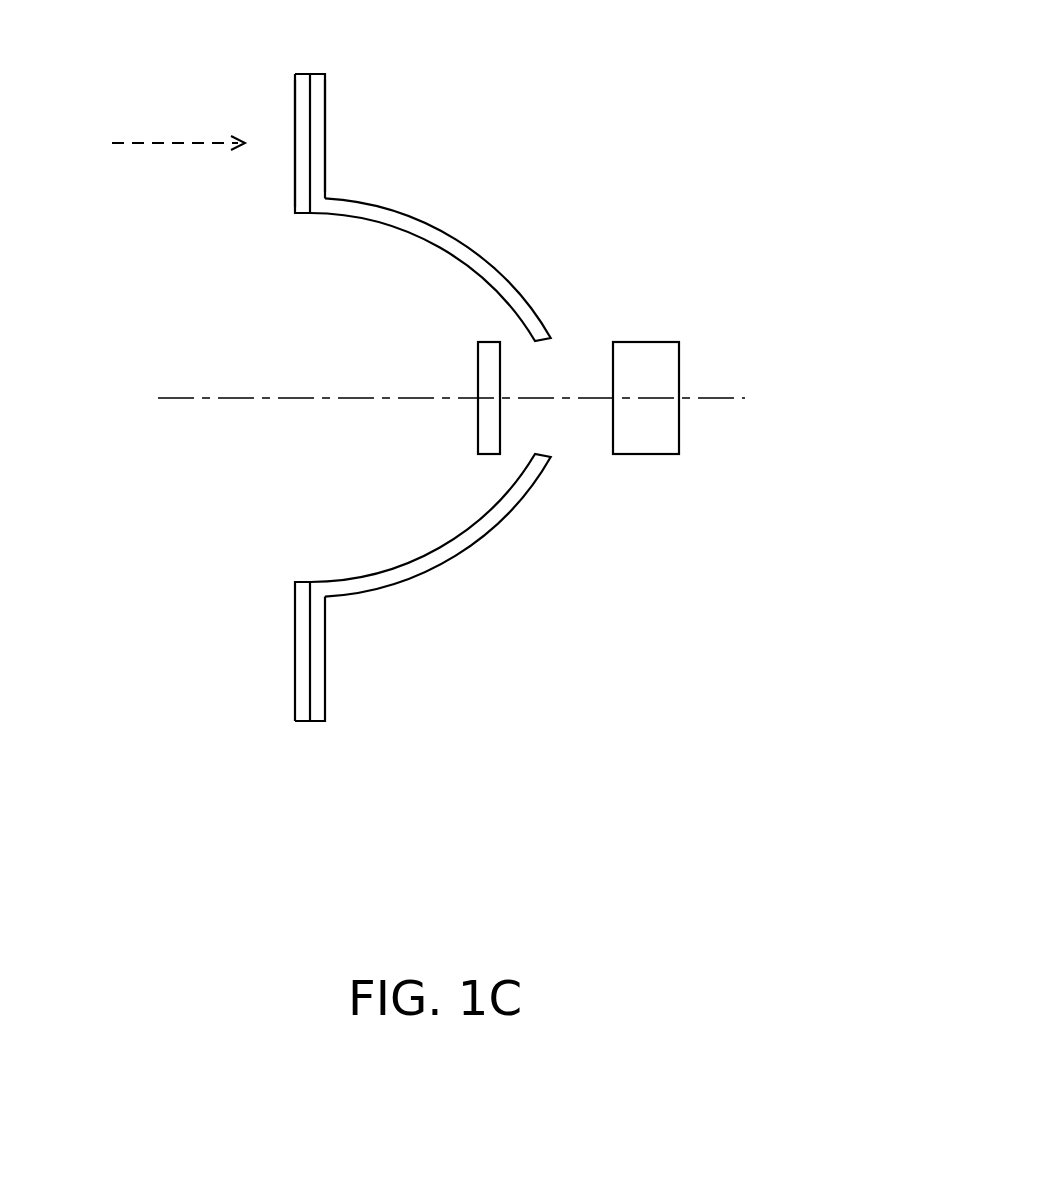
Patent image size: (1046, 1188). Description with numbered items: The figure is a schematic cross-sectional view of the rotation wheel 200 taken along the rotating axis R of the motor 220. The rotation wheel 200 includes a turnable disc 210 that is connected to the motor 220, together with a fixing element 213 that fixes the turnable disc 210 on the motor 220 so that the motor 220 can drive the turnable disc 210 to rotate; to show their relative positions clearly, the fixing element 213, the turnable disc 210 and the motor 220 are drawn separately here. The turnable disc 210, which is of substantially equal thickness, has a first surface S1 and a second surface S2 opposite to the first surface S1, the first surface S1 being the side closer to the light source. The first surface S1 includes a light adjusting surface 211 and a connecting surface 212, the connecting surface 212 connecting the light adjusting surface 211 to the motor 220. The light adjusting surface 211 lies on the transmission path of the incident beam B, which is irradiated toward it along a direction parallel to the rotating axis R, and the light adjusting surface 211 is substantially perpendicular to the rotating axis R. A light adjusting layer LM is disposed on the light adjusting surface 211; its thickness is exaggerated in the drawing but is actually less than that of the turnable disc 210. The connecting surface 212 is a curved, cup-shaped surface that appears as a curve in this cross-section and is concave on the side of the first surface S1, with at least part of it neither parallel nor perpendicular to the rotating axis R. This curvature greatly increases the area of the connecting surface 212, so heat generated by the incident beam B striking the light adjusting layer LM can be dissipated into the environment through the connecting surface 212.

The rotation wheel 200 is at (798, 888).
The turnable disc 210 is at (421, 395).
The light adjusting surface 211 is at (322, 158).
The connecting surface 212 is at (462, 240).
The fixing element 213 is at (490, 417).
The motor 220 is at (662, 370).
The first surface S1 is at (298, 100).
The second surface S2 is at (337, 100).
The incident beam B is at (162, 143).
The rotating axis R is at (218, 397).
The light adjusting layer LM is at (303, 690).